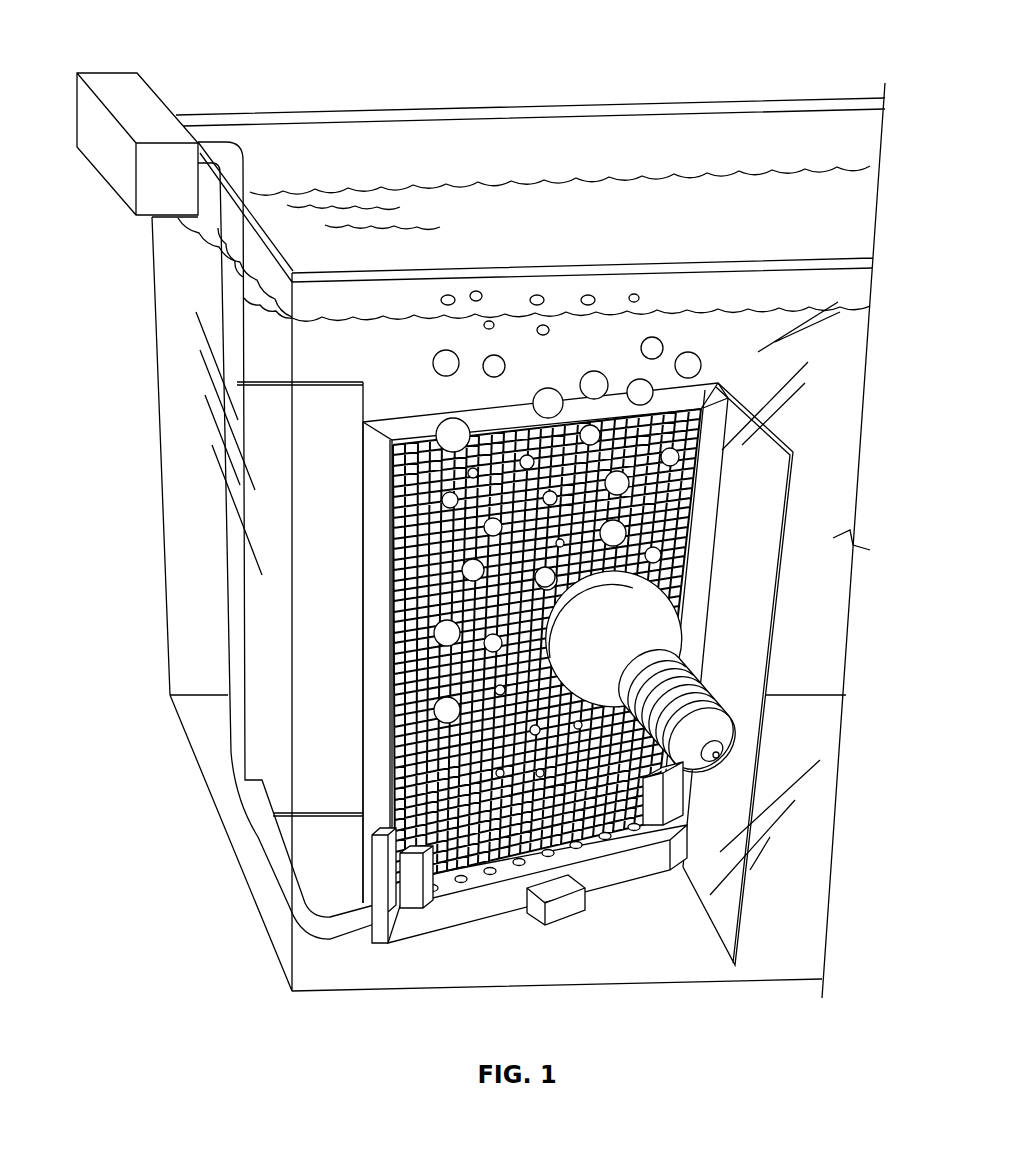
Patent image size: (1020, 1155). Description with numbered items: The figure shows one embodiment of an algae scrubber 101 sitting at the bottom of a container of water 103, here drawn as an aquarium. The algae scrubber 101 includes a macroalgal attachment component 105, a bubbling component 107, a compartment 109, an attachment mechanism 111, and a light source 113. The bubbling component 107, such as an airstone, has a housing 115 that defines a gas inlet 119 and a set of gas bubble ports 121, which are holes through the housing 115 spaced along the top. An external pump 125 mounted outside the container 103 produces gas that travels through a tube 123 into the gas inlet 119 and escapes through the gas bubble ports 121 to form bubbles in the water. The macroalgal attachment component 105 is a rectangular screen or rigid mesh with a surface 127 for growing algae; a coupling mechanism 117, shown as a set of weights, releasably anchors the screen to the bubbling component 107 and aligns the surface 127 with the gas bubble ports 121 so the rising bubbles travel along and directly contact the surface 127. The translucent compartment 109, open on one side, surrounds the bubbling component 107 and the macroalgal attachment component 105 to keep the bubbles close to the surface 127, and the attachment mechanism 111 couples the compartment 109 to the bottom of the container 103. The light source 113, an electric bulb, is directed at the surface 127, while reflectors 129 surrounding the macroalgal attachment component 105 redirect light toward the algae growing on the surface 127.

The algae scrubber 101 is at (700, 388).
The container of water 103 is at (597, 103).
The macroalgal attachment component 105 is at (687, 542).
The bubbling component 107 is at (422, 915).
The compartment 109 is at (365, 530).
The attachment mechanism 111 is at (560, 912).
The light source 113 is at (687, 627).
The housing 115 is at (637, 860).
The coupling mechanism 117 is at (668, 795).
The gas inlet 119 is at (372, 927).
The gas bubble ports 121 is at (497, 876).
The tube 123 is at (198, 142).
The external pump 125 is at (117, 82).
The surface 127 is at (417, 713).
The reflectors 129 is at (337, 400).